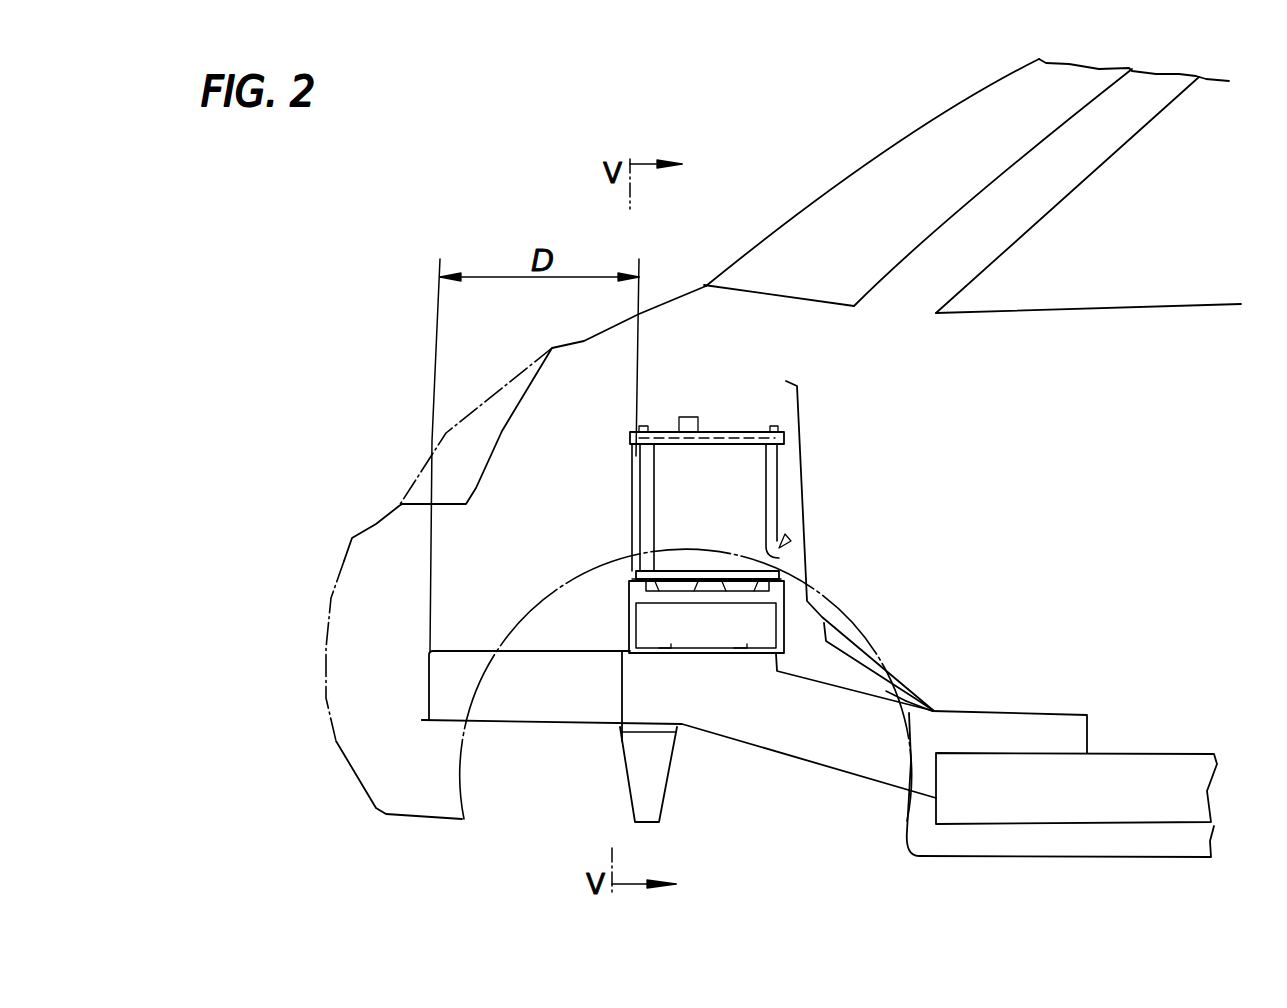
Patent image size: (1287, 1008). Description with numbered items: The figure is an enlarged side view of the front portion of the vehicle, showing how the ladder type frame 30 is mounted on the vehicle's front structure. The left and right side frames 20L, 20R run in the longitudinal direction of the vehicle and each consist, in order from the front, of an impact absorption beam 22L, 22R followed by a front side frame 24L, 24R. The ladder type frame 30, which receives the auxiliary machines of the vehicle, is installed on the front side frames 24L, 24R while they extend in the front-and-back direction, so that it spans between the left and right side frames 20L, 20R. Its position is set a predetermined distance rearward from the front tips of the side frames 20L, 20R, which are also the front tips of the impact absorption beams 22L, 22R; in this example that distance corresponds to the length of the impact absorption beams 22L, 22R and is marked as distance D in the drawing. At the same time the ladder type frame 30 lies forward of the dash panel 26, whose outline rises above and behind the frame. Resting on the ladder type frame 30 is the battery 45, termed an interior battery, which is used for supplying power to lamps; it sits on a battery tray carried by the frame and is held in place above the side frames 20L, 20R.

The side frame 20L is at (1094, 830).
The side frame 20R is at (1033, 823).
The impact absorption beam 22L is at (616, 763).
The impact absorption beam 22R is at (557, 727).
The front side frame 24L is at (920, 780).
The front side frame 24R is at (795, 757).
The dash panel 26 is at (797, 413).
The ladder type frame 30 is at (633, 628).
The battery 45 is at (690, 502).